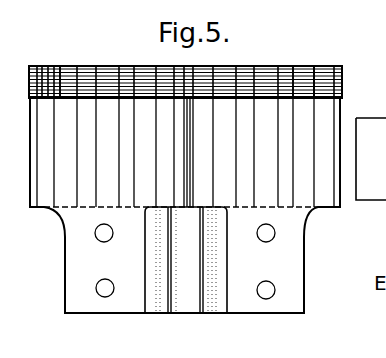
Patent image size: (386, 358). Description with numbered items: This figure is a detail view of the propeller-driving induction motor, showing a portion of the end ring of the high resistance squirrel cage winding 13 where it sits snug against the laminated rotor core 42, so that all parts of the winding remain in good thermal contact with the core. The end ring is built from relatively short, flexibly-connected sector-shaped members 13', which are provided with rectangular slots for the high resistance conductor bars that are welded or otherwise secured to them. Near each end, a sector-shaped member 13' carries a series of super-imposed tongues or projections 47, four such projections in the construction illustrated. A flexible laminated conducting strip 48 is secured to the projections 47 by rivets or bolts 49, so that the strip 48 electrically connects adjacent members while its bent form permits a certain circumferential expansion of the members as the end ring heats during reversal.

The high resistance winding 13 is at (185, 72).
The sector-shaped member 13' is at (203, 77).
The rotor core 42 is at (306, 70).
The tongues or projections 47 is at (62, 258).
The flexible laminated conducting strip 48 is at (187, 308).
The rivets or bolts 49 is at (98, 290).